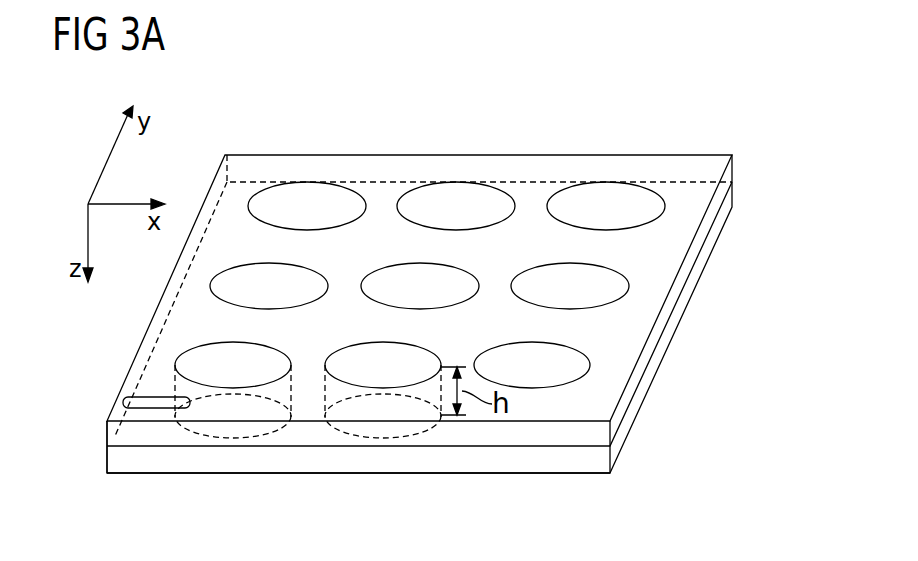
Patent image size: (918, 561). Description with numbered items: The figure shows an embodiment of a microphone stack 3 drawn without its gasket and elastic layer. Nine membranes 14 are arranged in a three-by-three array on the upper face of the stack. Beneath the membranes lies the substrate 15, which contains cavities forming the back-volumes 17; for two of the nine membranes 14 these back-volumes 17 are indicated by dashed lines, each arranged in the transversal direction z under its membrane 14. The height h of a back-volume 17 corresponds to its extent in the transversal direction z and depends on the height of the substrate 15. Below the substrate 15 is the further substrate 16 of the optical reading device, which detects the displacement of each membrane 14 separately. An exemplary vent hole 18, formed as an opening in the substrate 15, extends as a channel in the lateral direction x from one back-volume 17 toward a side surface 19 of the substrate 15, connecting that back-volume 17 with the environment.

The microphone stack 3 is at (659, 114).
The membrane 14 is at (521, 358).
The substrate 15 is at (655, 253).
The further substrate 16 is at (357, 463).
The back-volume 17 is at (338, 392).
The vent hole 18 is at (155, 397).
The side surface 19 is at (97, 423).